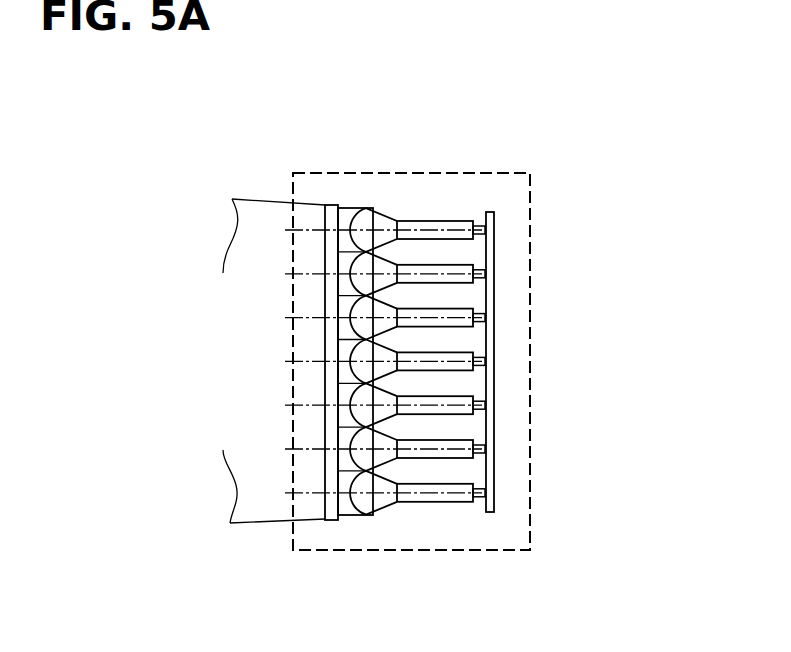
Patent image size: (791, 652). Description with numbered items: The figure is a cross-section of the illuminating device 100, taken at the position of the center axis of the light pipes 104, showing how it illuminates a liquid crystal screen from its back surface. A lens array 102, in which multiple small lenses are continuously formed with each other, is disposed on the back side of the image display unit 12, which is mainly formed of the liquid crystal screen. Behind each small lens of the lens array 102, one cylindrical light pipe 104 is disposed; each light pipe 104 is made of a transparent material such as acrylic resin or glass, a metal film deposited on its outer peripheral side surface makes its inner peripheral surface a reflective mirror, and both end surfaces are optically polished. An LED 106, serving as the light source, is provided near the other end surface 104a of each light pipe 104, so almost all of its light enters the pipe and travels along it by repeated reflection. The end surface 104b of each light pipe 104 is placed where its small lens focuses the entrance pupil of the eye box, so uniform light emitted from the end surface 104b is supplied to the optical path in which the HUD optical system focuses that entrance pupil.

The illuminating device 100 is at (535, 330).
The image display unit 12 is at (325, 218).
The lens array 102 is at (367, 207).
The light pipe 104 is at (436, 221).
The other end surface 104a is at (478, 226).
The end surface 104b is at (384, 222).
The LED 106 is at (488, 248).